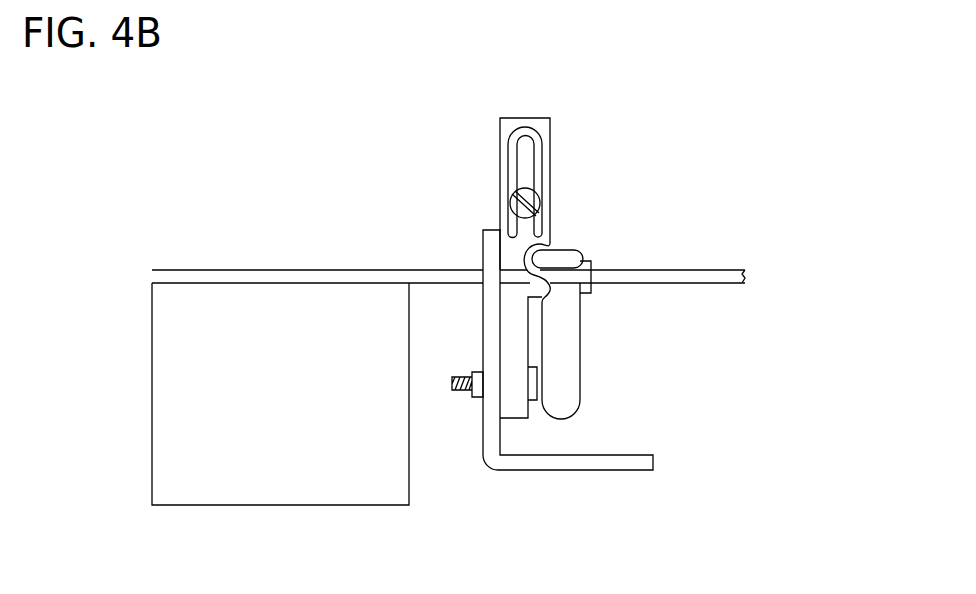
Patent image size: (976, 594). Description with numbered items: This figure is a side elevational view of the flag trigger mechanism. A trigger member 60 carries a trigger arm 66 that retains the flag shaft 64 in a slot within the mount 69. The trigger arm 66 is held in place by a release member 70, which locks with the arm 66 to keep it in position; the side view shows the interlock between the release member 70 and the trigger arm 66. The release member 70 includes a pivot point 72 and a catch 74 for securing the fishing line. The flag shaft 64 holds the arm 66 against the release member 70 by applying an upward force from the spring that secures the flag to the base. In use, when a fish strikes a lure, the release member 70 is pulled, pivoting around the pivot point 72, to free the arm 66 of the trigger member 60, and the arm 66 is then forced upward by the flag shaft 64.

The trigger member 60 is at (562, 330).
The flag shaft 64 is at (655, 273).
The trigger arm 66 is at (570, 257).
The mount 69 is at (617, 463).
The release member 70 is at (550, 183).
The pivot point 72 is at (452, 392).
The catch 74 is at (535, 138).